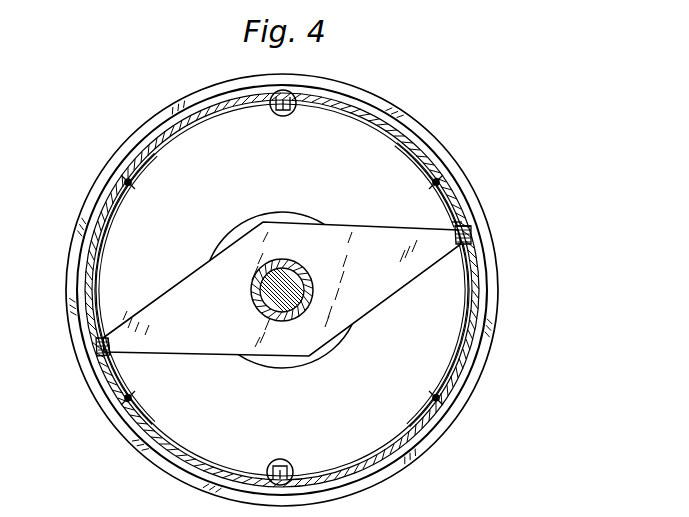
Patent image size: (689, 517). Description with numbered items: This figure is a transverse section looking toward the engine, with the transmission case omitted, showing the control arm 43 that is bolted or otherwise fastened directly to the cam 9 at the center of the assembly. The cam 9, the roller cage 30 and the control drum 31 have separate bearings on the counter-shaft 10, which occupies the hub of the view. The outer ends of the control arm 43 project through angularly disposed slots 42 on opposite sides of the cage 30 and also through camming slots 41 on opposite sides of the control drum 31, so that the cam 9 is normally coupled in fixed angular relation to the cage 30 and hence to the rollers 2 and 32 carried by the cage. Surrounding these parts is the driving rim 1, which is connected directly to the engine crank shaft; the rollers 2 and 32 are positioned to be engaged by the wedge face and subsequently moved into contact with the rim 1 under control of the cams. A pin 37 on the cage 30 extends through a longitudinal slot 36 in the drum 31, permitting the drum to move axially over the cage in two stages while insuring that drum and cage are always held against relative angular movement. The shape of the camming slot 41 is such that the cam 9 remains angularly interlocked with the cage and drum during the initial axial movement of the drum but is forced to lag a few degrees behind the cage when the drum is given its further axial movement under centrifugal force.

The driving rim 1 is at (402, 110).
The roller 2 is at (271, 114).
The cam 9 is at (292, 216).
The counter-shaft 10 is at (263, 311).
The roller cage 30 is at (345, 116).
The control drum 31 is at (462, 223).
The roller 32 is at (292, 464).
The longitudinal slot 36 is at (127, 182).
The pin 37 is at (133, 184).
The camming slot 41 is at (478, 232).
The angularly disposed slot 42 is at (92, 262).
The control arm 43 is at (470, 234).